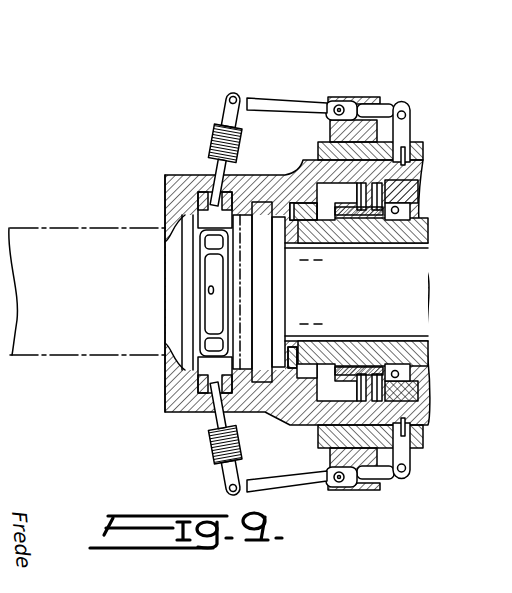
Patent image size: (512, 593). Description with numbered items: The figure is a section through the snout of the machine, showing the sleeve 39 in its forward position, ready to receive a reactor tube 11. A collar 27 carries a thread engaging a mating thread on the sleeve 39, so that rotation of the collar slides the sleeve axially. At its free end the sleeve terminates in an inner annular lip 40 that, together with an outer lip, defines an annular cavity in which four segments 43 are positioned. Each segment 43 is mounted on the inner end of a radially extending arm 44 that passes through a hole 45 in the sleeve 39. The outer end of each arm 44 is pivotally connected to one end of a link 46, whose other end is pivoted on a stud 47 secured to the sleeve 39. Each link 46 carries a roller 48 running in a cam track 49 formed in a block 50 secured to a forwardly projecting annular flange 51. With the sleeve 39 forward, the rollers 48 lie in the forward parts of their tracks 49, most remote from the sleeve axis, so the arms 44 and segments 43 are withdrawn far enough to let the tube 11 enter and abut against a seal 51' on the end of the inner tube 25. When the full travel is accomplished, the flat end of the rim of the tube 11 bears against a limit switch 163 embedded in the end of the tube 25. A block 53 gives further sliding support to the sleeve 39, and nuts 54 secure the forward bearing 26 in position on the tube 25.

The reactor tube 11 is at (62, 350).
The tube 25 is at (428, 225).
The forward bearing 26 is at (395, 222).
The collar 27 is at (414, 208).
The sleeve 39 is at (292, 167).
The inner annular lip 40 is at (256, 201).
The segments 43 is at (205, 232).
The radially extending arm 44 is at (208, 143).
The hole 45 is at (198, 186).
The link 46 is at (278, 97).
The stud 47 is at (410, 134).
The roller 48 is at (346, 102).
The cam track 49 is at (380, 106).
The block 50 is at (355, 100).
The forwardly projecting annular flange 51 is at (403, 293).
The seal 51' is at (331, 292).
The block 53 is at (328, 376).
The nuts 54 is at (373, 222).
The limit switch 163 is at (314, 236).